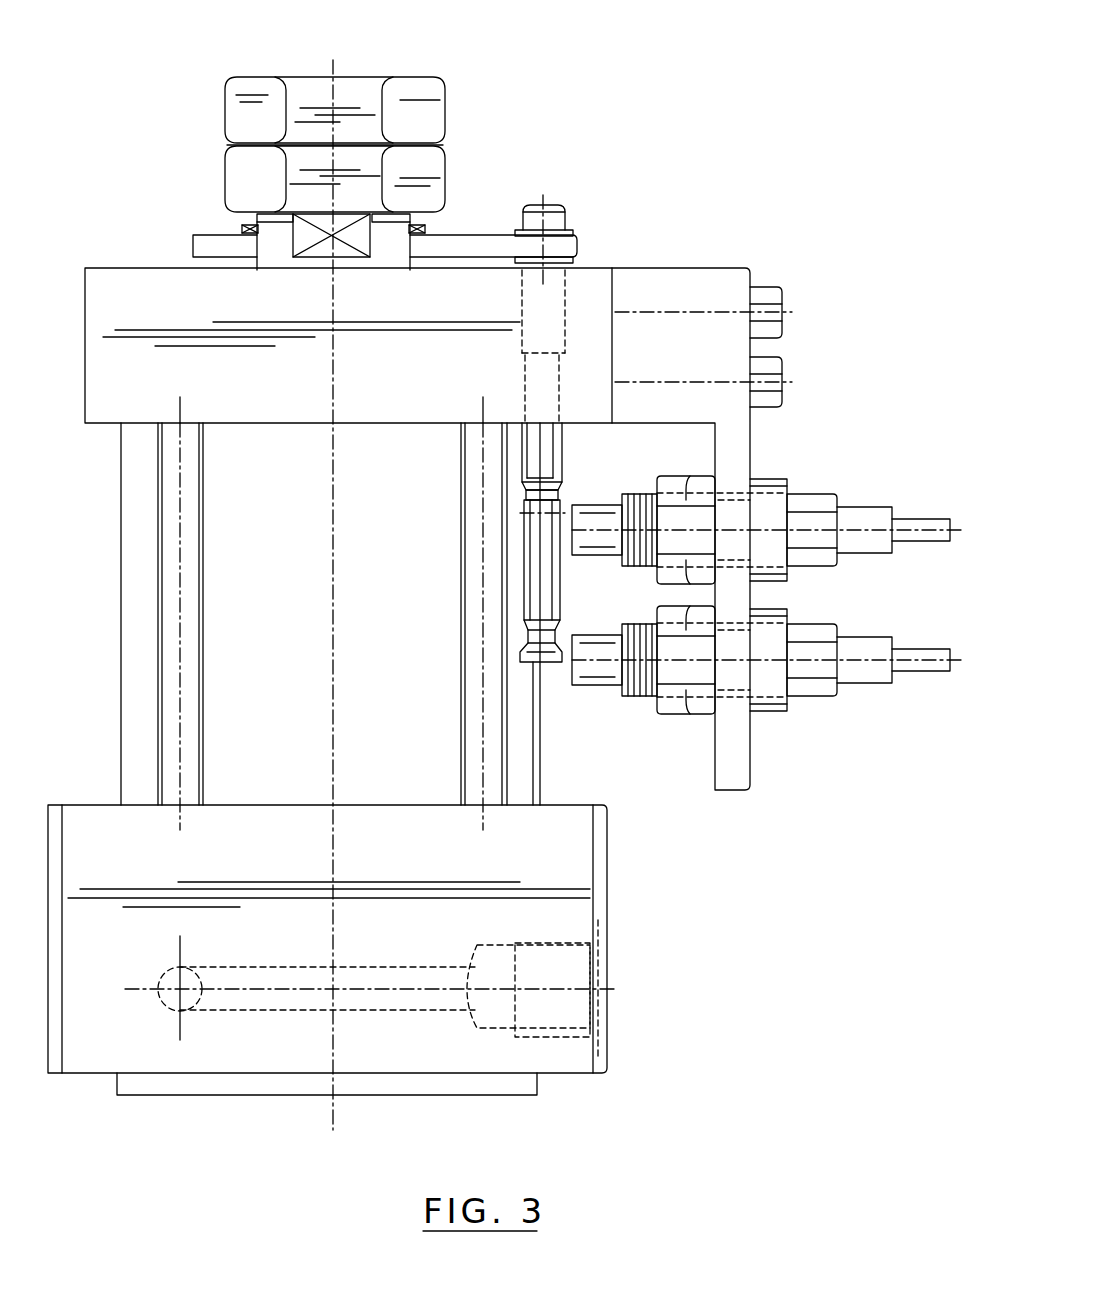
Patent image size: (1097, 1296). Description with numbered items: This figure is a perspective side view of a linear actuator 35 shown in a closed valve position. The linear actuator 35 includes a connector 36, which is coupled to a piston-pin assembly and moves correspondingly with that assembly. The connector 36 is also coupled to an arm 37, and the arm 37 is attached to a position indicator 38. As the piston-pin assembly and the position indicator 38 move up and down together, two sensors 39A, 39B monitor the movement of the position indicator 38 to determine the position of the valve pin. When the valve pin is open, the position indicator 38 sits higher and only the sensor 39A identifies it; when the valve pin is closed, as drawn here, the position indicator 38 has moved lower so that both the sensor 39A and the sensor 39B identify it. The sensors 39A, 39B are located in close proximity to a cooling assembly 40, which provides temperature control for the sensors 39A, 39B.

The linear actuator 35 is at (702, 117).
The connector 36 is at (432, 118).
The arm 37 is at (469, 243).
The position indicator 38 is at (555, 442).
The sensor 39A is at (572, 560).
The sensor 39B is at (572, 690).
The cooling assembly 40 is at (567, 887).